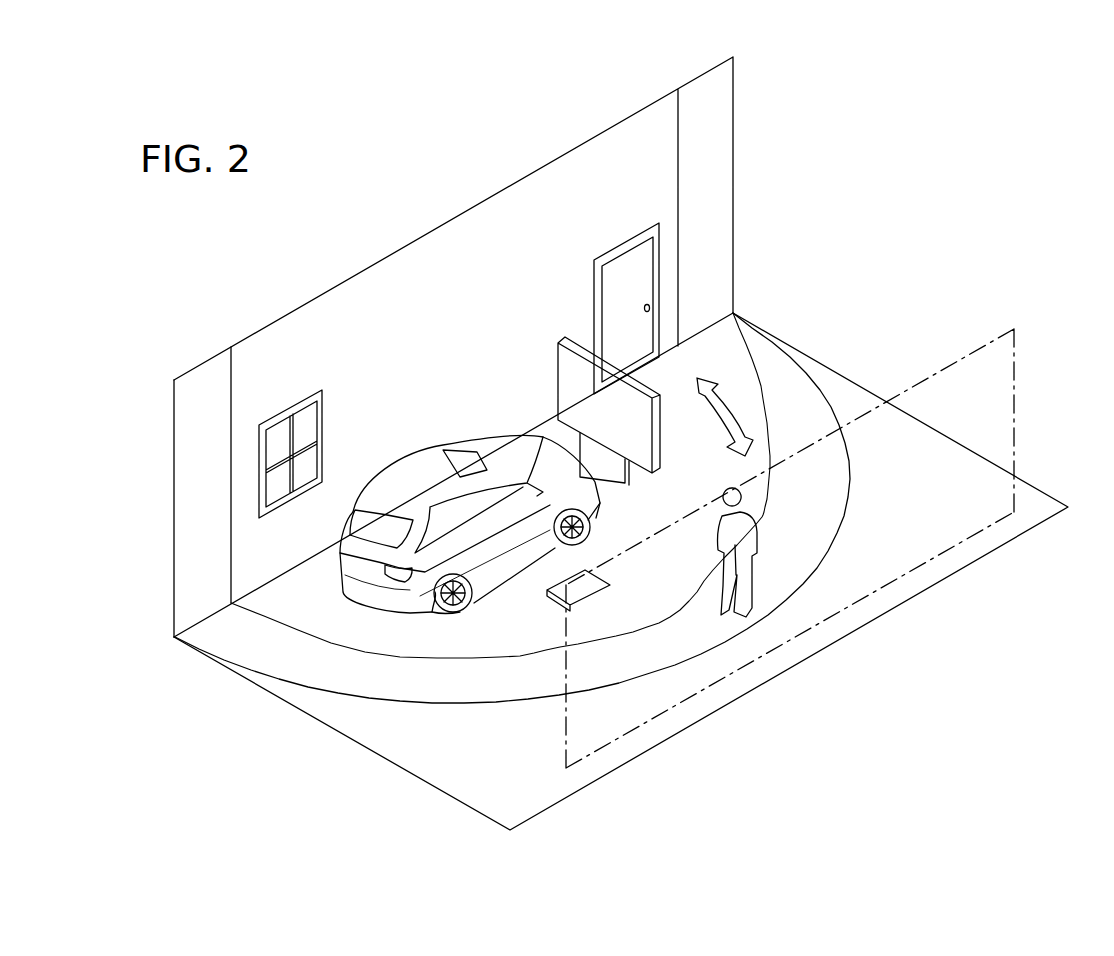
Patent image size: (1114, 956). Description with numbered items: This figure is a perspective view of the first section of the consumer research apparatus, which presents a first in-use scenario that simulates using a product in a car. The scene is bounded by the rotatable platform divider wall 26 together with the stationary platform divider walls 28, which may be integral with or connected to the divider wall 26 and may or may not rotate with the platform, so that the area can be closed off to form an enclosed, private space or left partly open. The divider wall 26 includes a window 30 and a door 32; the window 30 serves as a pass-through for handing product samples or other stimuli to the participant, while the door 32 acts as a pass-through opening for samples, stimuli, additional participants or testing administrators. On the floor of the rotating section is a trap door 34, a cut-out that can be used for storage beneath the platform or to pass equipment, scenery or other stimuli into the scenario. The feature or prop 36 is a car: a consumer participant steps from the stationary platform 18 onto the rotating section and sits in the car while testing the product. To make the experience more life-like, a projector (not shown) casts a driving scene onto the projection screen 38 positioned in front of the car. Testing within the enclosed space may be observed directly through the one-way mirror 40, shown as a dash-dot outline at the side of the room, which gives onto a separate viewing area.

The stationary platform 18 is at (360, 672).
The rotatable platform divider wall 26 is at (494, 215).
The stationary platform divider walls 28 is at (207, 382).
The window 30 is at (297, 403).
The door 32 is at (617, 243).
The trap door 34 is at (547, 592).
The feature or prop 36 is at (416, 470).
The projection screen 38 is at (576, 375).
The one-way mirror 40 is at (1014, 383).